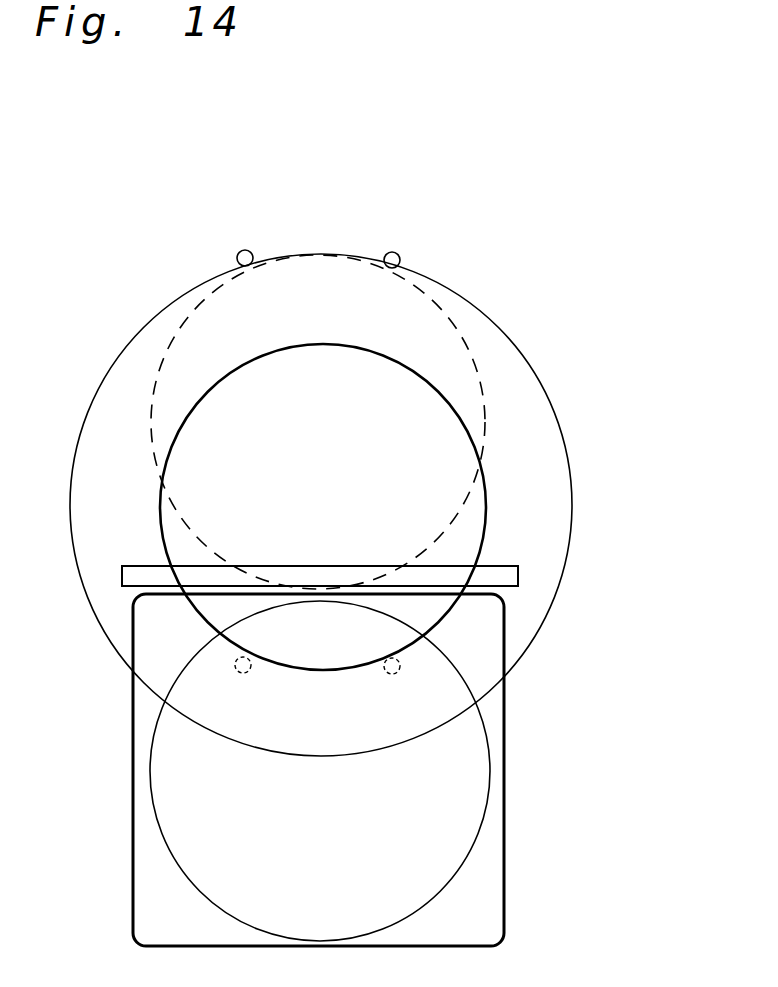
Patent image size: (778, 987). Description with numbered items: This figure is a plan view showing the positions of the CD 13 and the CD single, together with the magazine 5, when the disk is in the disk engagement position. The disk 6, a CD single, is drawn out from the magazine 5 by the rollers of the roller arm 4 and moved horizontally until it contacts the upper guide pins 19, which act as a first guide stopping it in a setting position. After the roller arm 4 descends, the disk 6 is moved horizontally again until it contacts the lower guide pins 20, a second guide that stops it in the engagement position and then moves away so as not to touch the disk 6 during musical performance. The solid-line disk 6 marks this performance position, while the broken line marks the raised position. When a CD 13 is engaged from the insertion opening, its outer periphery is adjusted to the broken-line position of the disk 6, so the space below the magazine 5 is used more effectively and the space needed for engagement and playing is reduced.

The CD 13 is at (533, 358).
The disk 6 is at (487, 510).
The upper guide pins 19 is at (386, 255).
The roller arm 4 is at (508, 584).
The magazine 5 is at (487, 898).
The lower guide pins 20 is at (250, 669).